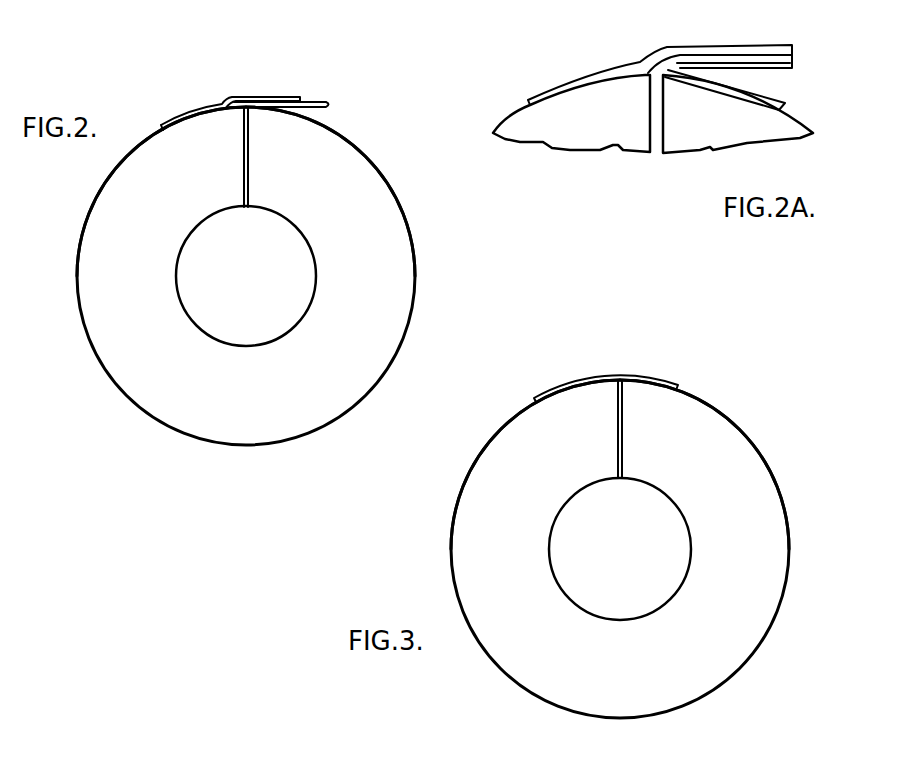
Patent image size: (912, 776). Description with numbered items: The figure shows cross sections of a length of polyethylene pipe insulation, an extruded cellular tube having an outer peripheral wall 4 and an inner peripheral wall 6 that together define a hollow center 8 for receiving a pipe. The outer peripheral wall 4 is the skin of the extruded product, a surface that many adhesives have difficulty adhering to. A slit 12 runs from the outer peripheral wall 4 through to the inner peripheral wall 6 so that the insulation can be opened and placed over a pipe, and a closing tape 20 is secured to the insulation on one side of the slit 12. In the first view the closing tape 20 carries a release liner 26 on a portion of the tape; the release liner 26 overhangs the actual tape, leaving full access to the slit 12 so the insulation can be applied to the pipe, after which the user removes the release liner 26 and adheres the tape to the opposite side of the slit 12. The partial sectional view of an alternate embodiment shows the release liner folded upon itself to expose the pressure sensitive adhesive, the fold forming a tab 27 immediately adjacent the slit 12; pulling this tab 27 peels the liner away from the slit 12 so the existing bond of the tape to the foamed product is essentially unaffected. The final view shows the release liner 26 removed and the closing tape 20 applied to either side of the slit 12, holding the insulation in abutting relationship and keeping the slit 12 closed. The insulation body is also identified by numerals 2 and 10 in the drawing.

In FIG. 2, the disc 2 is at (393, 176).
In FIG. 3, the disc 2 is at (762, 421).
In FIG. 2, the outer peripheral wall 4 is at (413, 305).
In FIG. 3, the outer peripheral wall 4 is at (788, 572).
In FIG. 2, the inner peripheral wall 6 is at (310, 252).
In FIG. 3, the inner peripheral wall 6 is at (687, 535).
In FIG. 2, the hollow center 8 is at (236, 264).
In FIG. 3, the hollow center 8 is at (608, 536).
In FIG. 2, the disc body 10 is at (340, 160).
In FIG. 2A, the disc body 10 is at (688, 137).
In FIG. 3, the disc body 10 is at (697, 427).
In FIG. 2, the slit 12 is at (264, 149).
In FIG. 3, the slit 12 is at (604, 440).
In FIG. 2, the closing tape 20 is at (245, 84).
In FIG. 3, the closing tape 20 is at (621, 360).
In FIG. 2, the release liner 26 is at (318, 100).
In FIG. 2A, the release liner 26 is at (790, 66).
In FIG. 2A, the tab 27 is at (787, 111).